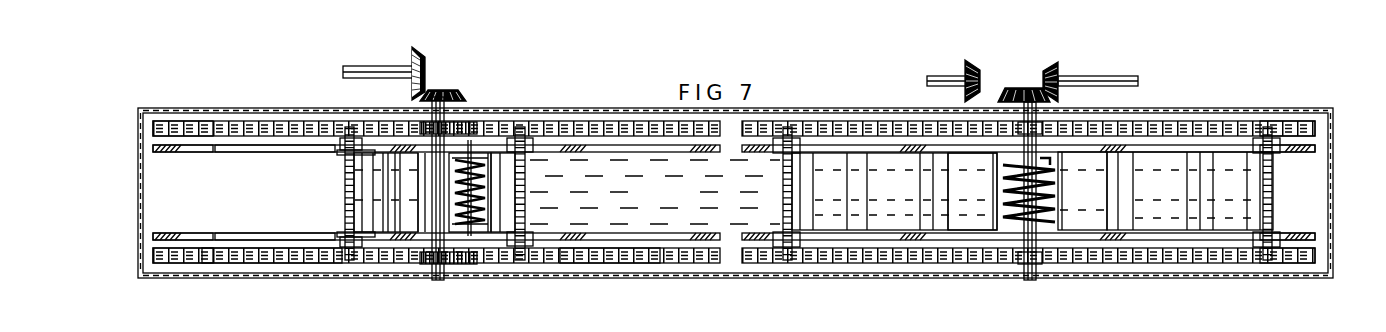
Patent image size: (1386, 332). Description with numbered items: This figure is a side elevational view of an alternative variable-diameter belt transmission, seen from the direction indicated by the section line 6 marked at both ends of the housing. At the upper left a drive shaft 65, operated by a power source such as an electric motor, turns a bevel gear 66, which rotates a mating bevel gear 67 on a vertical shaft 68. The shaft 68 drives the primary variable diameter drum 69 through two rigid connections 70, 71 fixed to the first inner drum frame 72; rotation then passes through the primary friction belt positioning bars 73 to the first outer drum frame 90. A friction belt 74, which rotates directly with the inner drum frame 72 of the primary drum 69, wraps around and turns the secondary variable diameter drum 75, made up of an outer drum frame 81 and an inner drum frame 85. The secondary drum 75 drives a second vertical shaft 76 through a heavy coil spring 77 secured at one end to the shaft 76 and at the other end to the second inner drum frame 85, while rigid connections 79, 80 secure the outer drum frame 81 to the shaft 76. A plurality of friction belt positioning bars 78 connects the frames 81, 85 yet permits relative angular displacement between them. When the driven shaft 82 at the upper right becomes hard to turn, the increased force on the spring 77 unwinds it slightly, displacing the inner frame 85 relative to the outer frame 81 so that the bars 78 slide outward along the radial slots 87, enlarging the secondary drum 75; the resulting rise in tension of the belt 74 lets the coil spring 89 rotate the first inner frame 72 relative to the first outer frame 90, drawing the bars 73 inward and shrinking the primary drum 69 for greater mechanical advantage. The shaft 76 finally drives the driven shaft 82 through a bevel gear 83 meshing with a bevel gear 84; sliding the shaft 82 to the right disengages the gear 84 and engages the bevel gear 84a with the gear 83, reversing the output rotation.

The section line of FIG. 6 is at (93, 188).
The drive shaft 65 is at (385, 66).
The bevel gear 66 is at (426, 72).
The bevel gear 67 is at (462, 94).
The shaft 68 is at (431, 279).
The primary variable diameter drum 69 is at (195, 128).
The rigid connection 70 is at (428, 155).
The rigid connection 71 is at (416, 225).
The first inner drum frame 72 is at (258, 152).
The primary friction belt positioning bars 73 is at (527, 197).
The friction belt 74 is at (345, 190).
The secondary variable diameter drum 75 is at (1311, 131).
The shaft 76 is at (1038, 278).
The heavy coil spring 77 is at (1050, 166).
The friction belt positioning bars 78 is at (795, 123).
The rigid connection 79 is at (1040, 119).
The rigid connection 80 is at (1020, 270).
The outer drum frame 81 is at (885, 253).
The driven shaft 82 is at (1095, 69).
The bevel gear 83 is at (1008, 86).
The bevel gear 84 is at (1043, 73).
The bevel gear 84a is at (963, 69).
The second inner drum frame 85 is at (957, 230).
The radial slots 87 is at (1170, 153).
The coil spring 89 is at (483, 165).
The first outer drum frame 90 is at (580, 252).